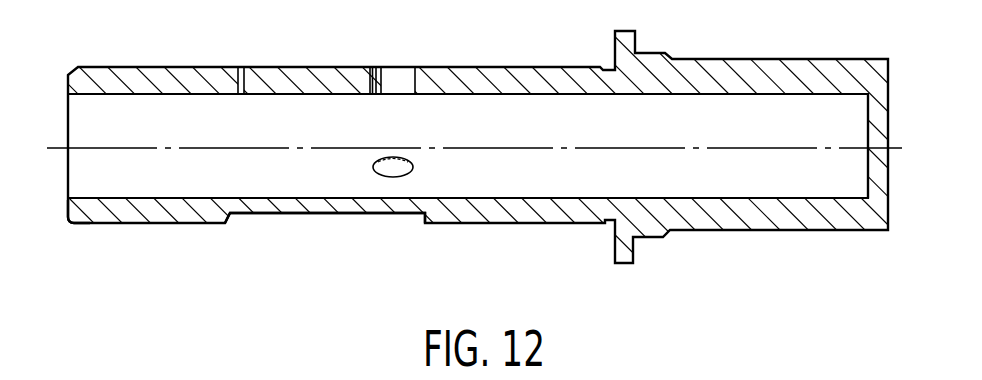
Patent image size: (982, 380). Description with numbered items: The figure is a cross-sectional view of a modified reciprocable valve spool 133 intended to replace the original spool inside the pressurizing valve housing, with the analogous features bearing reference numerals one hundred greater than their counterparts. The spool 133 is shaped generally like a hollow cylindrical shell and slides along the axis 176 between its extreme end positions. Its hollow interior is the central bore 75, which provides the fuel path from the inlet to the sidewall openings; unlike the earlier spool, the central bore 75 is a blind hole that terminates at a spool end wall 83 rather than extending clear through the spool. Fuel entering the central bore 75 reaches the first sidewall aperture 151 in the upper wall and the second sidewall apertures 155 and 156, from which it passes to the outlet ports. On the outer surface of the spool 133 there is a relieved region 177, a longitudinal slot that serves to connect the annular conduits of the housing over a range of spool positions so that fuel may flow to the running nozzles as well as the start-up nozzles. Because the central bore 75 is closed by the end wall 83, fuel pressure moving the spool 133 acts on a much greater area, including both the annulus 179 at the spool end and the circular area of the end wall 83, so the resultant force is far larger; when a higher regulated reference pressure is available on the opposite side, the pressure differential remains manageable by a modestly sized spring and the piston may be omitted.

The modified valve spool 133 is at (491, 190).
The central bore 75 is at (685, 135).
The spool end wall 83 is at (882, 117).
The axis 176 is at (827, 148).
The annulus 179 is at (68, 200).
The relieved region 177 is at (252, 214).
The first sidewall aperture 151 is at (243, 67).
The second sidewall aperture 155 is at (397, 78).
The second sidewall aperture 156 is at (392, 172).